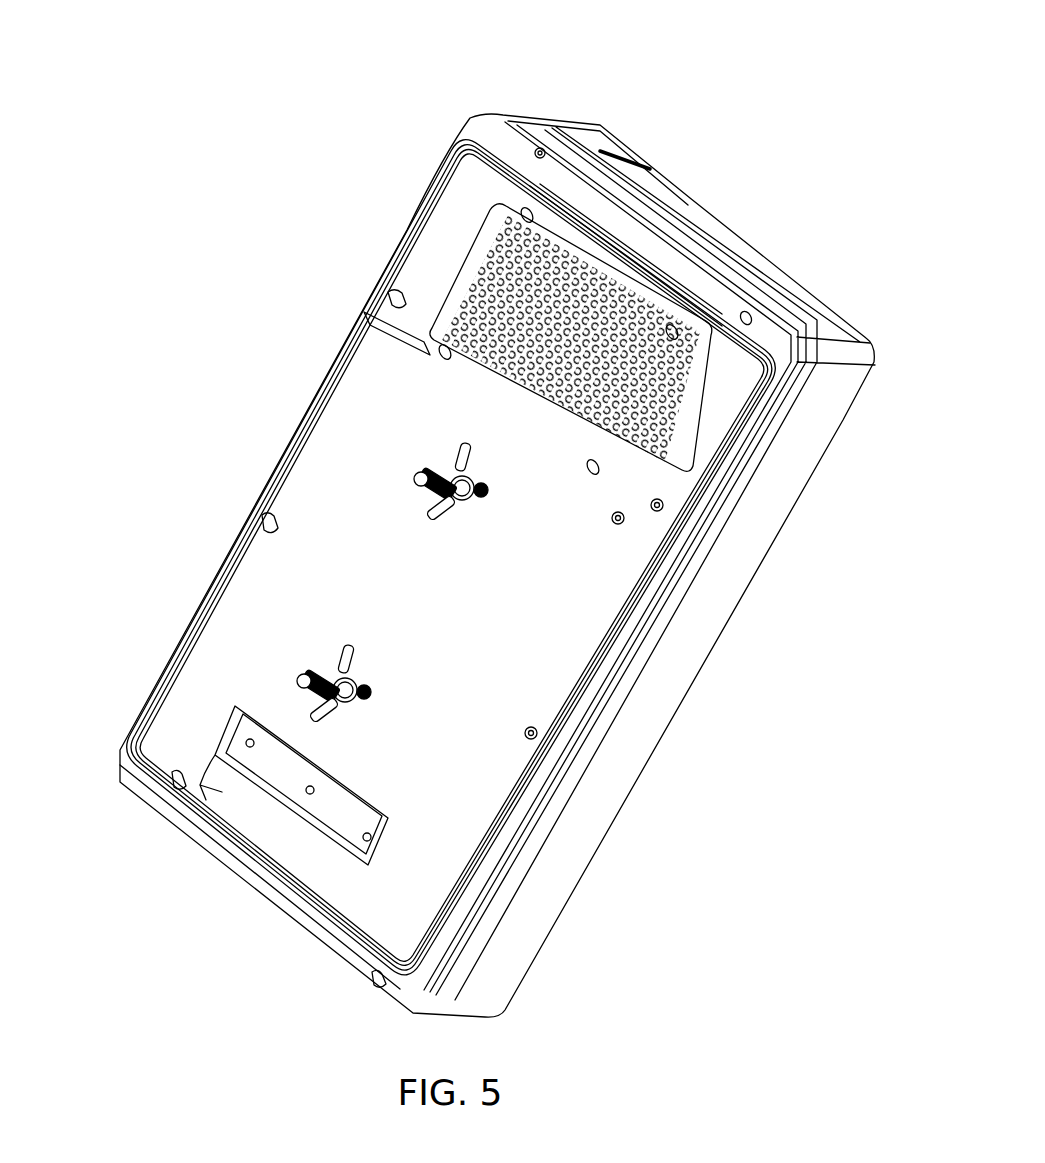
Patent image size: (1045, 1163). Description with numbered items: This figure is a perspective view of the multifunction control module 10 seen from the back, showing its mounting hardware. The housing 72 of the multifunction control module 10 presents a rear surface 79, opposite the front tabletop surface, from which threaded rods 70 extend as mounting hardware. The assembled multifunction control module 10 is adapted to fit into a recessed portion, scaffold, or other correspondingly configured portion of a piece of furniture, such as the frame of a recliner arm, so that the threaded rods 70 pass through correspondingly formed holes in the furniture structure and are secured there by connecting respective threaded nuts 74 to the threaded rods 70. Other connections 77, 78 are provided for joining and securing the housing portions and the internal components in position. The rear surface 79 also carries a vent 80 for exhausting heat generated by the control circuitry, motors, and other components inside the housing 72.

The multifunction control module 10 is at (816, 243).
The threaded rods 70 is at (418, 478).
The housing 72 is at (667, 693).
The threaded nuts 74 is at (457, 452).
The connections 77 is at (540, 150).
The connections 78 is at (300, 795).
The rear surface 79 is at (412, 648).
The vent 80 is at (497, 278).